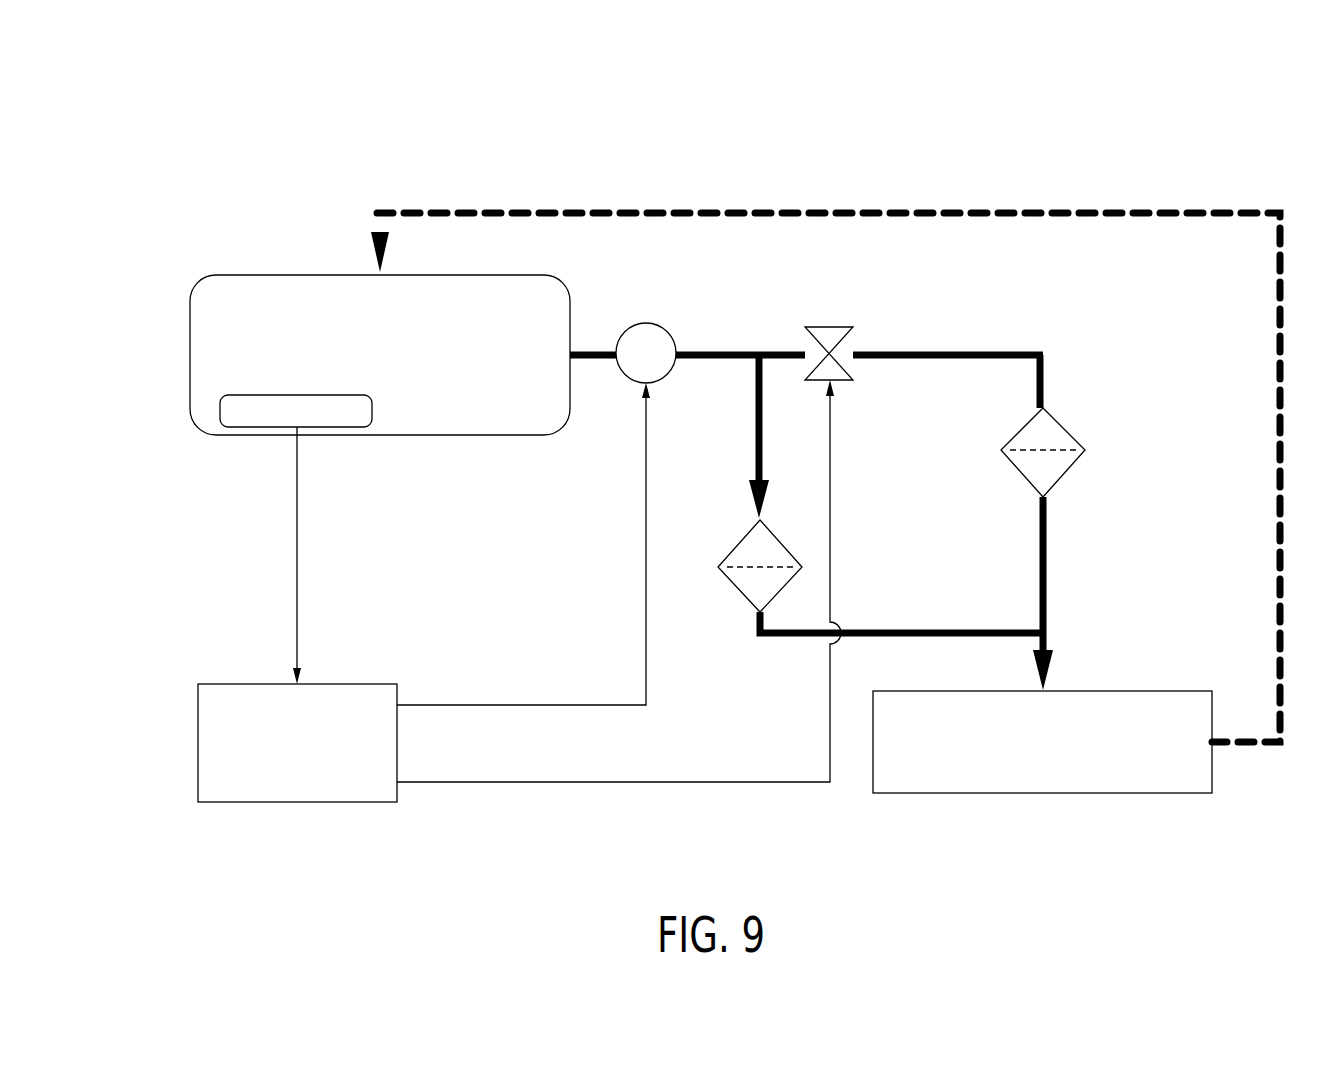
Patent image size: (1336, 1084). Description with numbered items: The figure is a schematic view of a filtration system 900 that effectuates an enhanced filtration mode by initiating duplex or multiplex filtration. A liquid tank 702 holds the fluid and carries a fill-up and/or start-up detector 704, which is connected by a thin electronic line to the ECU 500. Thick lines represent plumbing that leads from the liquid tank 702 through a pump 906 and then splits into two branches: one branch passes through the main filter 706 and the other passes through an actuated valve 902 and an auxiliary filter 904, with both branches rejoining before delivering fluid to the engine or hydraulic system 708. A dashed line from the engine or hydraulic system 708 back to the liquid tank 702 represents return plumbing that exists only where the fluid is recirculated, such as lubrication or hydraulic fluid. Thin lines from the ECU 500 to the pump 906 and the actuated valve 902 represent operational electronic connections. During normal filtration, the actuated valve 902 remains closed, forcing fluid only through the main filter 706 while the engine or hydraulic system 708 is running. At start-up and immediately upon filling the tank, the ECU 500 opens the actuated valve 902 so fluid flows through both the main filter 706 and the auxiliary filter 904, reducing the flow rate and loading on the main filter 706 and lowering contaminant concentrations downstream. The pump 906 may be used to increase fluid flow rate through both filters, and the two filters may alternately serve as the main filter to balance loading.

The filtration system 900 is at (352, 118).
The liquid tank 702 is at (245, 275).
The fill-up and/or start-up detector 704 is at (250, 428).
The ECU 500 is at (197, 755).
The pump 906 is at (628, 322).
The actuated valve 902 is at (826, 327).
The auxiliary filter 904 is at (1064, 430).
The main filter 706 is at (738, 545).
The engine or hydraulic system 708 is at (1160, 690).